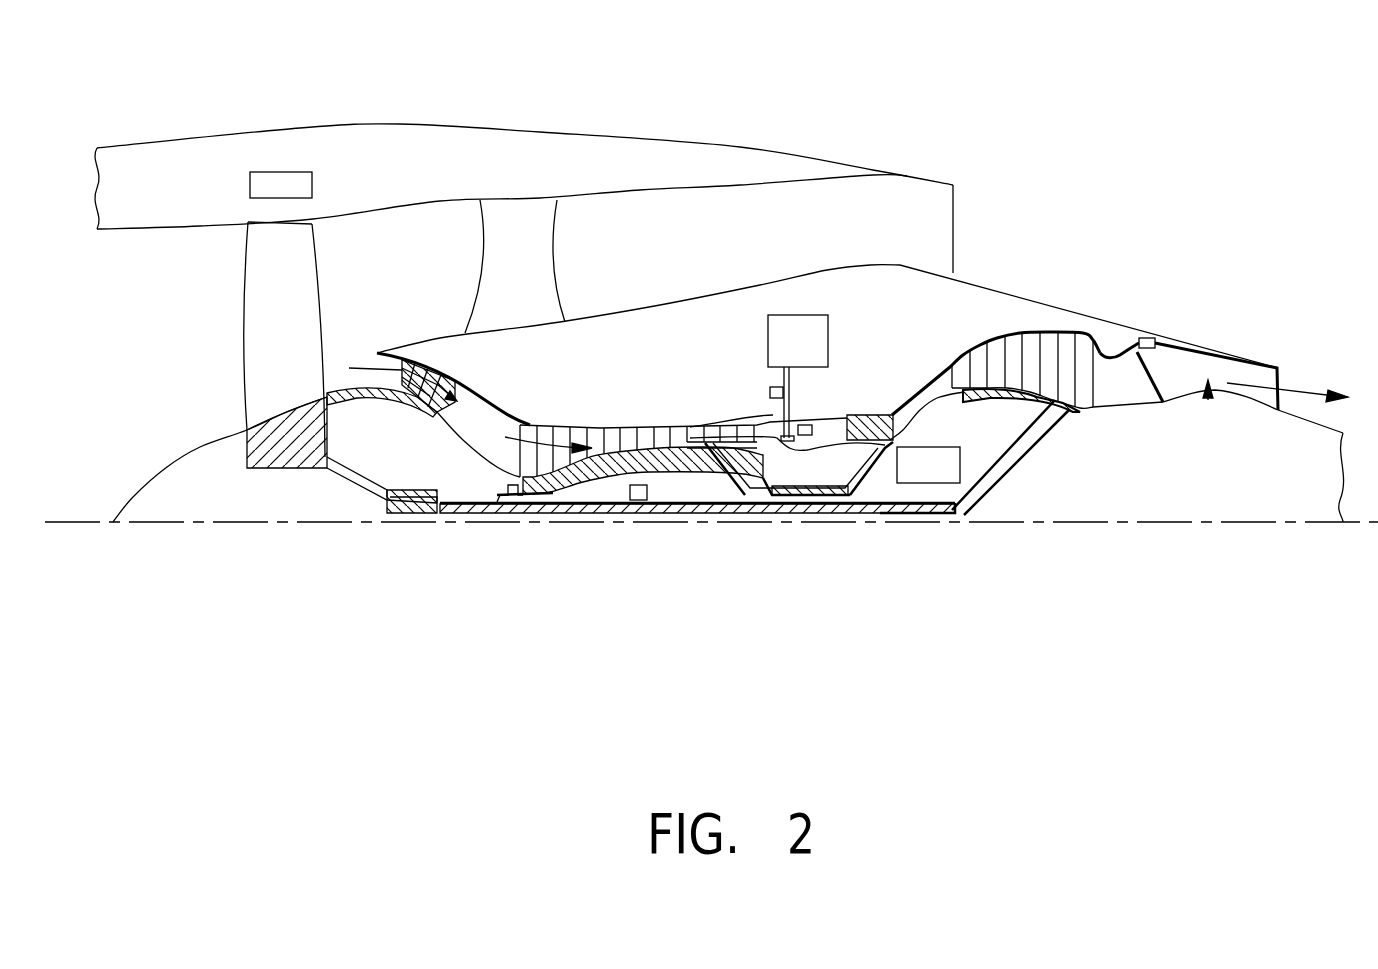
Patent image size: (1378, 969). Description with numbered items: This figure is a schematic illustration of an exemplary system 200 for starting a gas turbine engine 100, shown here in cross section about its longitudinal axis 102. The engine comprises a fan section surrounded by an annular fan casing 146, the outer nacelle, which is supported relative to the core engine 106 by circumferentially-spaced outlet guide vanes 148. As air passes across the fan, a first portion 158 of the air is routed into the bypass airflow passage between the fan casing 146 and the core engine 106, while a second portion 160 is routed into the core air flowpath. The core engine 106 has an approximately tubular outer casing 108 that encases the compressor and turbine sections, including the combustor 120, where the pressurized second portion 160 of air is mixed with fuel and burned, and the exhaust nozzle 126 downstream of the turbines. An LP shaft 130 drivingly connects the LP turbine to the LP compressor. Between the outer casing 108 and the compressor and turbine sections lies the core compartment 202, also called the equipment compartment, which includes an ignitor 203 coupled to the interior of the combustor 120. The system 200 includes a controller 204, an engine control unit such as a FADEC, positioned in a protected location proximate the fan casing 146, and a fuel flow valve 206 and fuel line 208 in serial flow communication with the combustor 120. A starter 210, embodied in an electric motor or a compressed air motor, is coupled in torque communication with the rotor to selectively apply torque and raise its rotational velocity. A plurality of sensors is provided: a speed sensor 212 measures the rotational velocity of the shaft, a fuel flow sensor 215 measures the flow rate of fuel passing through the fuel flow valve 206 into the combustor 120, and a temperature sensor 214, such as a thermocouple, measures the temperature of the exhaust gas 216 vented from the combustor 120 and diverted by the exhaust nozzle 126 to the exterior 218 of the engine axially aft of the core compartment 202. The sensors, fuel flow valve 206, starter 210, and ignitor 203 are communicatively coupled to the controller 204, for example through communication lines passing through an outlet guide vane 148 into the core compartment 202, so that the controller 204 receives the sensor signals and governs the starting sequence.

The gas turbine engine 100 is at (802, 422).
The longitudinal axis 102 is at (1173, 522).
The core engine 106 is at (280, 497).
The outer casing 108 is at (1012, 292).
The combustor 120 is at (833, 415).
The exhaust nozzle 126 is at (1208, 400).
The LP shaft 130 is at (1000, 467).
The annular fan casing 146 is at (393, 127).
The outlet guide vanes 148 is at (553, 263).
The first portion of volume of air 158 is at (425, 247).
The second portion of volume of air 160 is at (349, 368).
The system for starting a gas turbine engine 200 is at (1070, 96).
The core compartment 202 is at (835, 365).
The ignitor 203 is at (803, 435).
The controller 204 is at (293, 172).
The fuel flow valve 206 is at (768, 322).
The fuel line 208 is at (787, 420).
The starter 210 is at (928, 465).
The speed sensor 212 is at (637, 492).
The temperature sensor 214 is at (1150, 336).
The fuel flow sensor 215 is at (770, 392).
The exhaust gas 216 is at (1283, 388).
The exterior of gas turbine engine 218 is at (1239, 432).